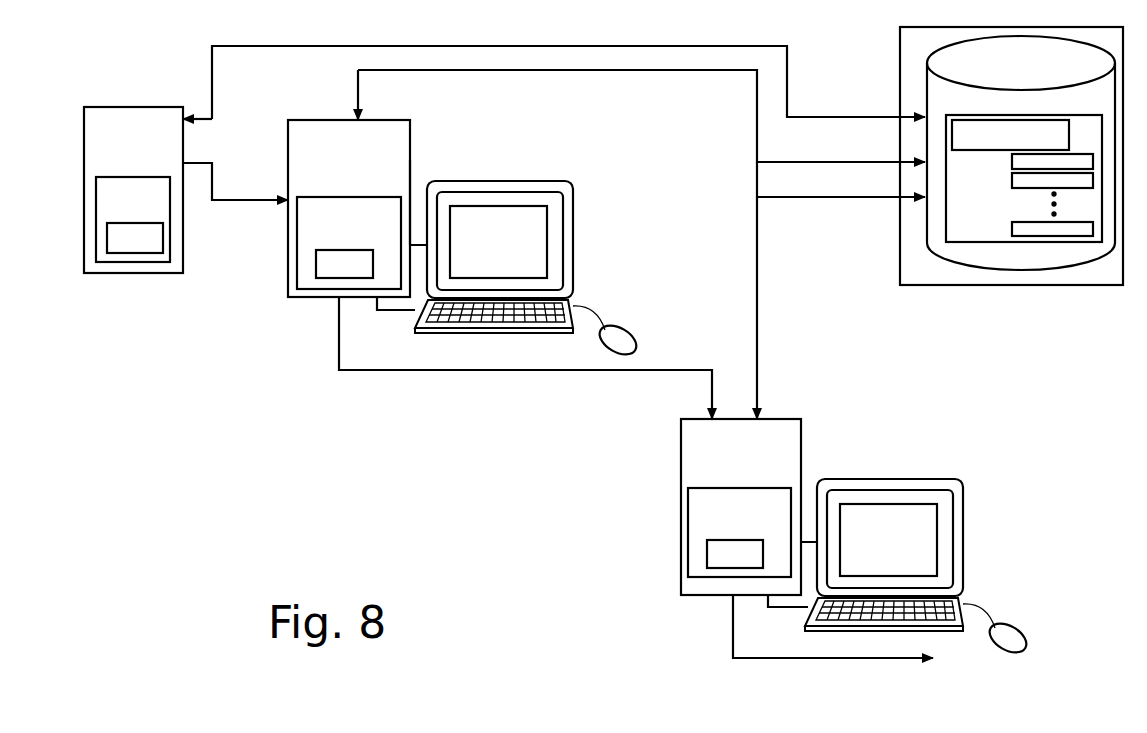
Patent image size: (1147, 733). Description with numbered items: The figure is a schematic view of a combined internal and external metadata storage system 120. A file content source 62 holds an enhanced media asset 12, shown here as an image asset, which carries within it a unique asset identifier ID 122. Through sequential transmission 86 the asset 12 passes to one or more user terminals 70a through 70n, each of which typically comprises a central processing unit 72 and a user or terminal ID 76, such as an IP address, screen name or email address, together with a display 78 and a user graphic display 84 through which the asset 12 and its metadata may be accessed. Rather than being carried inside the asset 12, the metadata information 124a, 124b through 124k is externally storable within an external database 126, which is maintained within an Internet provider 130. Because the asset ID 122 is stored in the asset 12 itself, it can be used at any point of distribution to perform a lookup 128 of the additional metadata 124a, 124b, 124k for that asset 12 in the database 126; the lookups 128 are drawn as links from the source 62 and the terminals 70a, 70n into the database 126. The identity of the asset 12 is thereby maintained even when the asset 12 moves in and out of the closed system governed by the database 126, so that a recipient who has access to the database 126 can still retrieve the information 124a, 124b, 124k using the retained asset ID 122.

The file content source 62 is at (128, 107).
The enhanced media asset 12 is at (123, 262).
The unique asset identifier ID 122 is at (972, 120).
The central processing unit 72 is at (288, 160).
The user or terminal ID 76 is at (400, 160).
The user terminal 70a is at (652, 187).
The user terminal 70n is at (815, 680).
The display 78 is at (573, 245).
The user graphic display 84 is at (527, 212).
The sequential transmission 86 is at (452, 370).
The lookup 128 is at (667, 46).
The Internet provider 130 is at (1080, 285).
The external database 126 is at (1020, 275).
The metadata information 124a is at (1012, 157).
The metadata information 124b is at (1012, 178).
The metadata information 124k is at (1012, 228).
The combined internal and external metadata storage system 120 is at (335, 472).